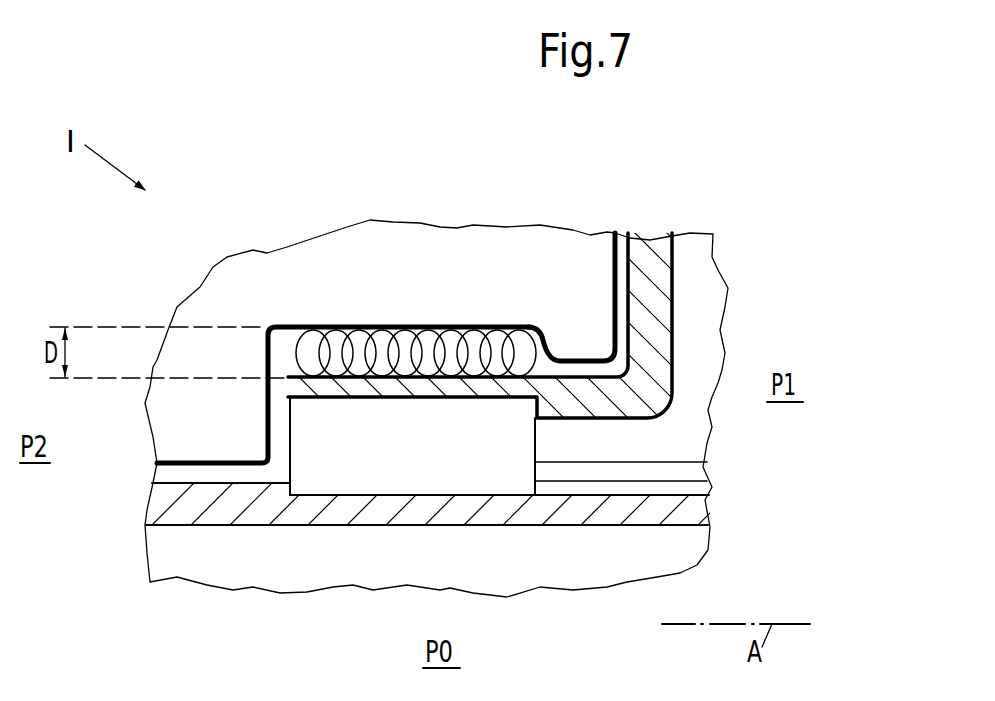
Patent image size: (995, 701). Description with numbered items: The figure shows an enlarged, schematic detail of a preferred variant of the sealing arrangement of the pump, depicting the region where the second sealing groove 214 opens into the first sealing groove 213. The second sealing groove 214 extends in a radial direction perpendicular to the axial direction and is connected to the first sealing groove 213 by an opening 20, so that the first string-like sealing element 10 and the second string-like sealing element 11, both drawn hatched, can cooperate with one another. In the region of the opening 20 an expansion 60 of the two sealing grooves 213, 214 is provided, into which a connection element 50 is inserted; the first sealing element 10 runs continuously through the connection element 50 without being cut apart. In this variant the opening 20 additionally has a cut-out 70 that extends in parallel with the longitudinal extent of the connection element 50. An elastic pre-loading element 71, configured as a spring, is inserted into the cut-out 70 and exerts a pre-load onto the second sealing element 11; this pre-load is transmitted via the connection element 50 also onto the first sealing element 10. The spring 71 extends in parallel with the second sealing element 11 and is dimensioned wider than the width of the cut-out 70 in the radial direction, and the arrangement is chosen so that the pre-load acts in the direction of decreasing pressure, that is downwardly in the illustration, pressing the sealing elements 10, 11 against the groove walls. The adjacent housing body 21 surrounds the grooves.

The first string-like sealing element 10 is at (688, 507).
The second string-like sealing element 11 is at (648, 265).
The opening 20 is at (468, 302).
The housing 21 is at (731, 291).
The connection element 50 is at (323, 477).
The expansion 60 is at (278, 435).
The cut-out 70 is at (542, 340).
The pre-loading element 71 is at (412, 330).
The first sealing groove 213 is at (692, 472).
The second sealing groove 214 is at (621, 250).